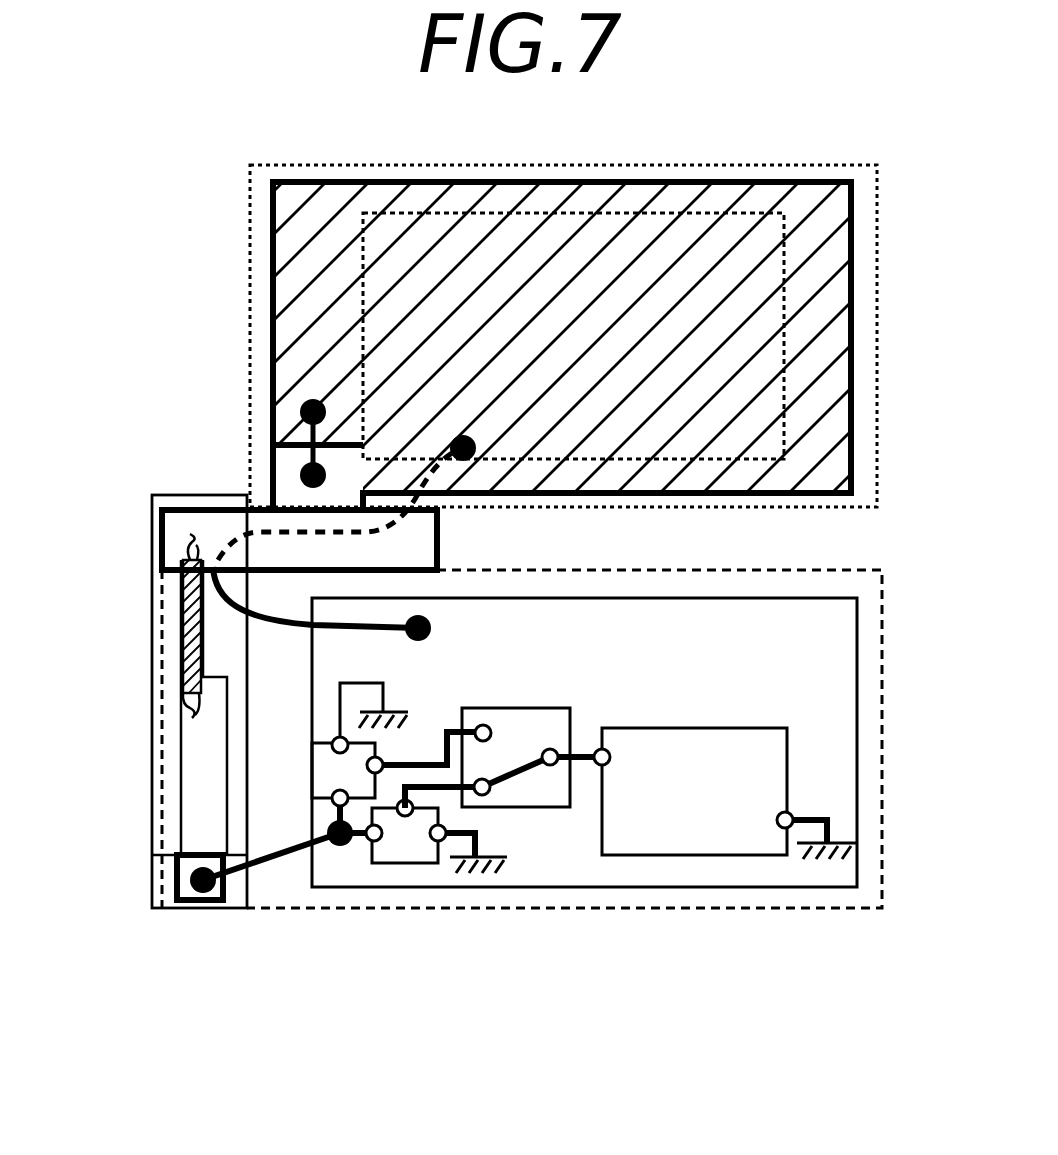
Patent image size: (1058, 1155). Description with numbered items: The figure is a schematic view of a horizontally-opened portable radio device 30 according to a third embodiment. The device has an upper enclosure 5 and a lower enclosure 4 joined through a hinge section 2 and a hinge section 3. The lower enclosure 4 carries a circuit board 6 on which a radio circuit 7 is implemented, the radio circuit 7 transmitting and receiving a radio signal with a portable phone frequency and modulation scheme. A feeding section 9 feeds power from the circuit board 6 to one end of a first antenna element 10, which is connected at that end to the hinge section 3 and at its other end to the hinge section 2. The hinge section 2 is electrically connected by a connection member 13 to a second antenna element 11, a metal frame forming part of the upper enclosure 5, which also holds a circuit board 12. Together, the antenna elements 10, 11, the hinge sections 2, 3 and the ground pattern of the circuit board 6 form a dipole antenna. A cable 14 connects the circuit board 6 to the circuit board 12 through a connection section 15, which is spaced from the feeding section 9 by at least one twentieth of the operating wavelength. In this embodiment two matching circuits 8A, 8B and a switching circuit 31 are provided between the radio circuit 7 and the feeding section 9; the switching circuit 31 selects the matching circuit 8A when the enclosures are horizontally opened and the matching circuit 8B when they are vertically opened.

The hinge section 2 is at (207, 525).
The hinge section 3 is at (197, 834).
The lower enclosure 4 is at (882, 603).
The upper enclosure 5 is at (865, 294).
The circuit board 6 is at (857, 783).
The radio circuit 7 is at (753, 850).
The matching circuit 8A is at (418, 863).
The matching circuit 8B is at (323, 777).
The feeding section 9 is at (265, 863).
The antenna element 10 is at (183, 606).
The antenna element 11 is at (300, 230).
The circuit board 12 is at (820, 397).
The connection member 13 is at (298, 438).
The cable 14 is at (390, 620).
The connection section 15 is at (432, 630).
The portable radio device 30 is at (812, 148).
The switching circuit 31 is at (543, 807).